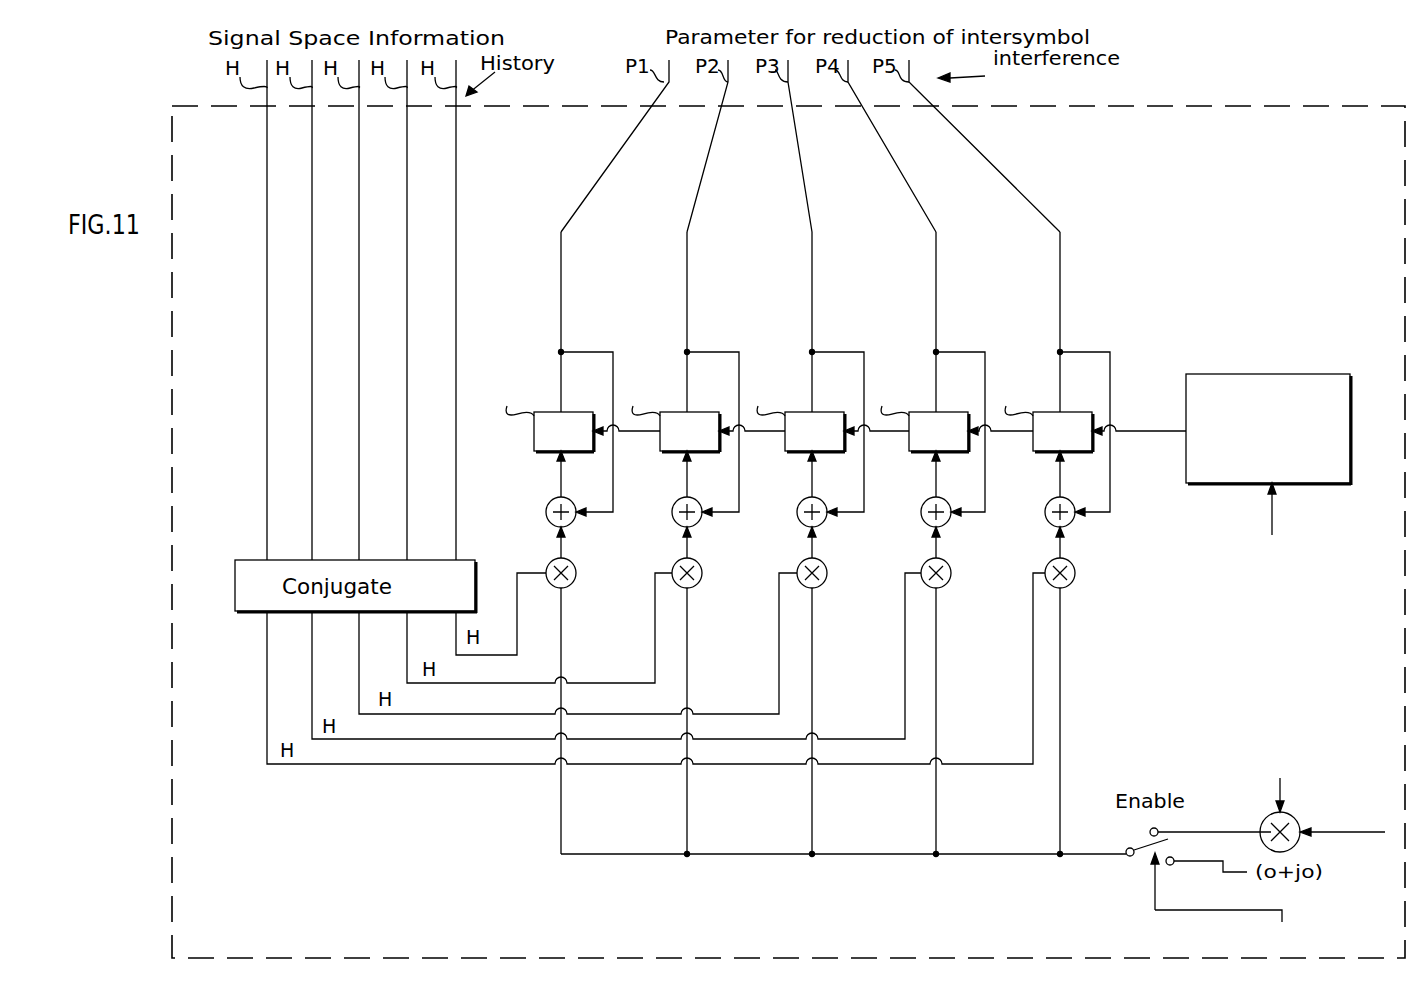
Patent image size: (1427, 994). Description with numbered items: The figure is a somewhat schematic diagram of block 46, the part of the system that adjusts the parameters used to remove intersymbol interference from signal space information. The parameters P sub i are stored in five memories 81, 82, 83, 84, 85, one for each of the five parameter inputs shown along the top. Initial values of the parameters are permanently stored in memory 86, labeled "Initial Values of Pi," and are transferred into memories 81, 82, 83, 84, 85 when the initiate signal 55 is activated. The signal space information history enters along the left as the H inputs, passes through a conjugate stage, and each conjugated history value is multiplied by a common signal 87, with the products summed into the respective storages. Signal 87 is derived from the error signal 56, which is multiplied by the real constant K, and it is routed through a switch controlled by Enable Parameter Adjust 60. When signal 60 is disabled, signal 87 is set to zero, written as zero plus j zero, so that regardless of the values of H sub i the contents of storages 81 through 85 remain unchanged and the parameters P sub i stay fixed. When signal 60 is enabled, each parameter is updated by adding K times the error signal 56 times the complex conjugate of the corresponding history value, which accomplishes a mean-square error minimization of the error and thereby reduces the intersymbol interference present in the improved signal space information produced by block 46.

The block 46 is at (326, 917).
The initiate signal 55 is at (1272, 515).
The error signal 56 is at (1346, 830).
The Enable Parameter Adjust 60 is at (1210, 901).
The memory 81 is at (534, 448).
The memory 82 is at (660, 448).
The memory 83 is at (785, 448).
The memory 84 is at (909, 448).
The memory 85 is at (1033, 448).
The memory 86 is at (1333, 461).
The signal 87 is at (770, 856).